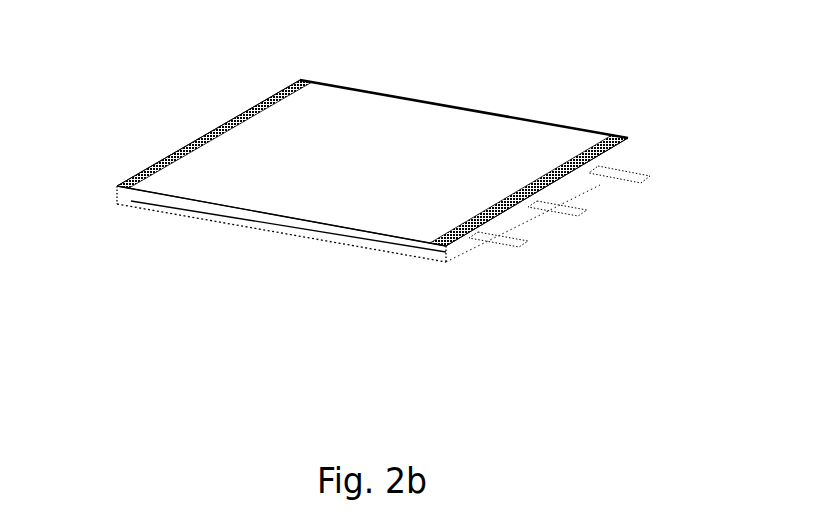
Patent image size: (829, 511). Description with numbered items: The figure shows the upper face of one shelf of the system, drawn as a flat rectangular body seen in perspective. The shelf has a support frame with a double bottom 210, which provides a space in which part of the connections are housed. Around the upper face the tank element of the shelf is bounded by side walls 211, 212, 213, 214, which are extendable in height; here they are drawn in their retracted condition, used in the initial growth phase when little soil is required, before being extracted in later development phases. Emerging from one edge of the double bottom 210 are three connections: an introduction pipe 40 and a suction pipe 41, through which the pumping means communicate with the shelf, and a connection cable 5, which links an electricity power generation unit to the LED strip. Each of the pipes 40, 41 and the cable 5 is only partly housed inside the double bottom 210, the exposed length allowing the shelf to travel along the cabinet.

The double bottom 210 is at (347, 260).
The side wall 211 is at (622, 150).
The side wall 212 is at (503, 108).
The side wall 213 is at (185, 133).
The side wall 214 is at (192, 207).
The introduction pipe 40 is at (520, 258).
The connection cable 5 is at (583, 220).
The suction pipe 41 is at (630, 170).